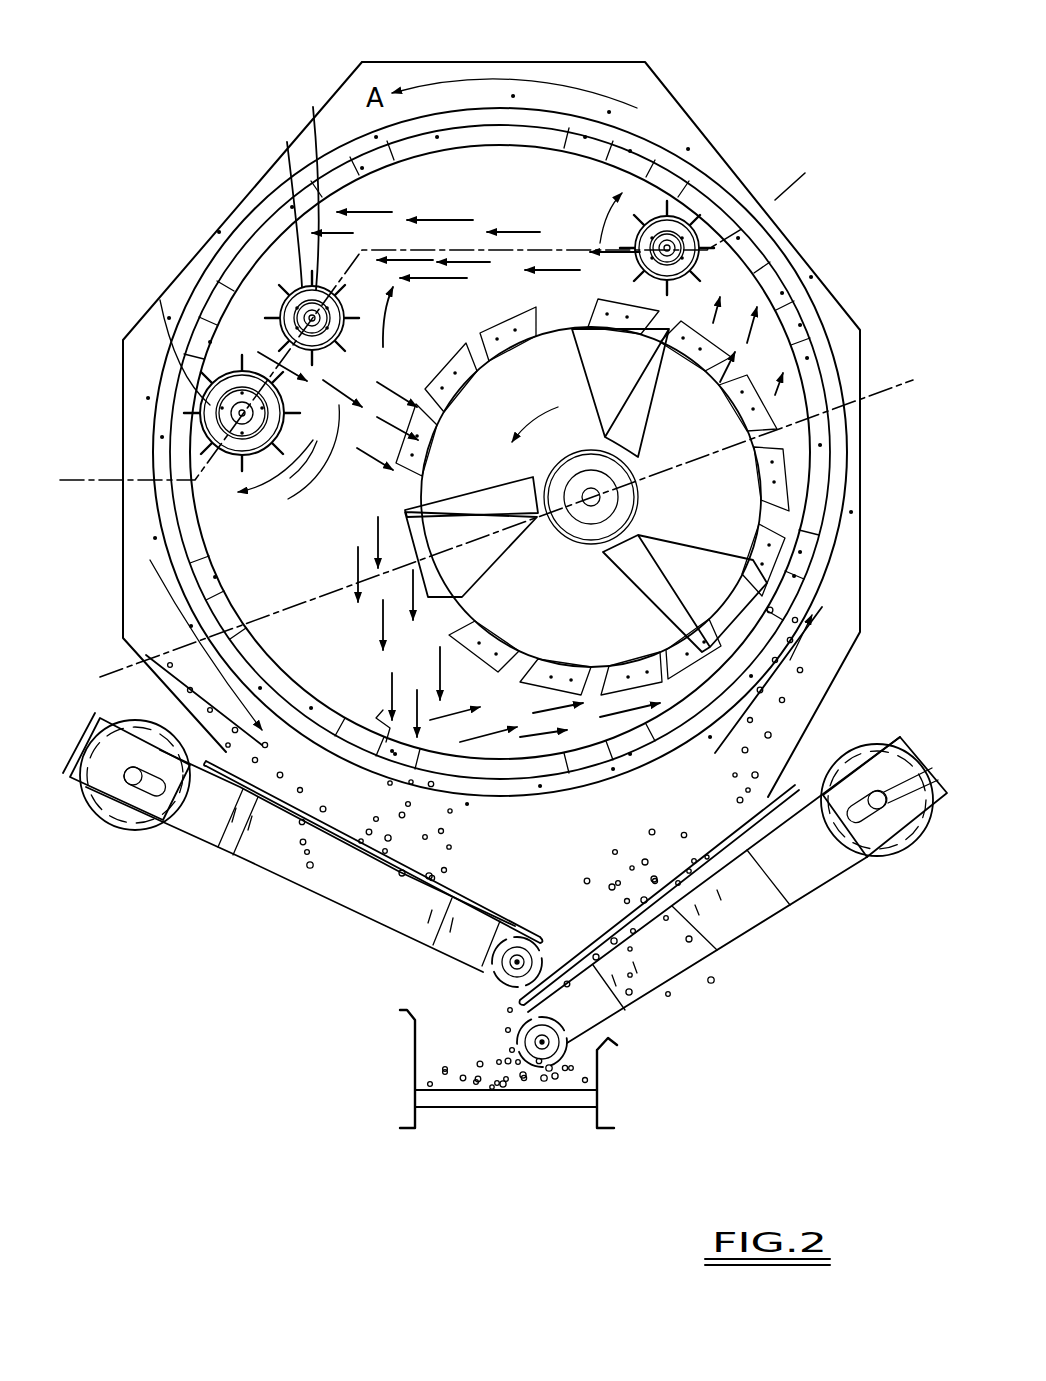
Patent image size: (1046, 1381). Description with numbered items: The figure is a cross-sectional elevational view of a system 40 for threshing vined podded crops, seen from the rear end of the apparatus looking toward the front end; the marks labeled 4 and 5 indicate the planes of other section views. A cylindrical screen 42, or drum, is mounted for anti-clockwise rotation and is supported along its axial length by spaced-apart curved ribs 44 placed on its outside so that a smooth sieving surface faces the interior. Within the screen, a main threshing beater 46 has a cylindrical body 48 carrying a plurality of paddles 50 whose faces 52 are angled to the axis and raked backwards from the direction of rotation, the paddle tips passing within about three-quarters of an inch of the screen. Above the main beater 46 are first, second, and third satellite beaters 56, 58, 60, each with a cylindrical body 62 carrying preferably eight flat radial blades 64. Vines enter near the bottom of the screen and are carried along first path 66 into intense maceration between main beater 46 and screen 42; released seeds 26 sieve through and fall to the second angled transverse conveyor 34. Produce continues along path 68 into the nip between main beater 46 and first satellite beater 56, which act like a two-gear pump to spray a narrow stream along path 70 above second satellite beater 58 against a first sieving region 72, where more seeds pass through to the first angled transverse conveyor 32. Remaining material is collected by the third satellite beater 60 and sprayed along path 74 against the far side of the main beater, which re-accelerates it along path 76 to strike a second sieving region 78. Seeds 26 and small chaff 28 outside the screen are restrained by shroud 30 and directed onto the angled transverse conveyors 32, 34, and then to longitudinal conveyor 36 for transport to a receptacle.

The system for threshing vined podded crops 40 is at (855, 88).
The path 70 is at (480, 227).
The cylindrical screen 42 is at (313, 107).
The cylindrical body 62 is at (290, 143).
The second satellite beater 58 is at (268, 174).
The curved ribs 44 is at (257, 240).
The first sieving region 72 is at (282, 302).
The longitudinal blades 64 is at (288, 332).
The third satellite beater 60 is at (205, 402).
The first satellite beater 56 is at (686, 212).
The path 68 is at (752, 332).
The faces 52 is at (610, 368).
The main threshing beater 46 is at (846, 470).
The cylindrical body 48 is at (750, 507).
The paddles 50 is at (792, 565).
The path 74 is at (165, 546).
The shroud 30 is at (126, 610).
The path 76 is at (393, 650).
The second sieving region 78 is at (383, 710).
The seeds 26 is at (810, 638).
The first path 66 is at (580, 728).
The first angled transverse conveyor 32 is at (326, 818).
The small chaff 28 is at (738, 852).
The second angled transverse conveyor 34 is at (664, 892).
The longitudinal conveyor 36 is at (526, 1095).
The section line 5- 5 is at (78, 502).
The section line 4- 4 is at (108, 706).